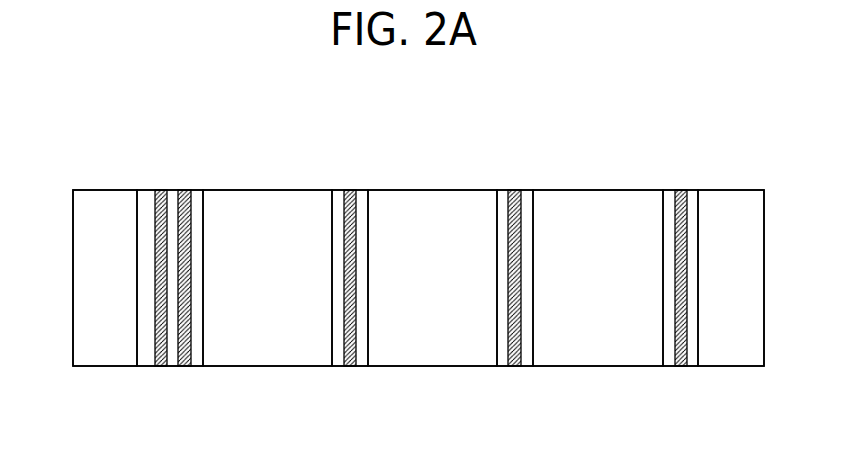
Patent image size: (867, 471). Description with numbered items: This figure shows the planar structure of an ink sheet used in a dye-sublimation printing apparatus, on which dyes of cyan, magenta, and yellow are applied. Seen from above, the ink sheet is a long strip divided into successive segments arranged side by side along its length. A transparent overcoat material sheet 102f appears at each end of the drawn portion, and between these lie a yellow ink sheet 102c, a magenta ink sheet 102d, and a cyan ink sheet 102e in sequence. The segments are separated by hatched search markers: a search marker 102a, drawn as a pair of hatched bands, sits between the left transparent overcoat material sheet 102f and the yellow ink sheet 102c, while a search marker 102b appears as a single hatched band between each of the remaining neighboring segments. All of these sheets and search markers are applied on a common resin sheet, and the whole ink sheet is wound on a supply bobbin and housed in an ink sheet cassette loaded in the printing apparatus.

The search marker 102a is at (173, 362).
The search marker 102b is at (349, 362).
The yellow ink sheet 102c is at (254, 197).
The magenta ink sheet 102d is at (402, 197).
The cyan ink sheet 102e is at (592, 197).
The transparent overcoat material sheet 102f is at (113, 197).